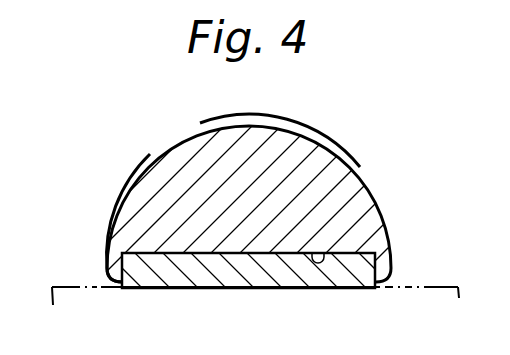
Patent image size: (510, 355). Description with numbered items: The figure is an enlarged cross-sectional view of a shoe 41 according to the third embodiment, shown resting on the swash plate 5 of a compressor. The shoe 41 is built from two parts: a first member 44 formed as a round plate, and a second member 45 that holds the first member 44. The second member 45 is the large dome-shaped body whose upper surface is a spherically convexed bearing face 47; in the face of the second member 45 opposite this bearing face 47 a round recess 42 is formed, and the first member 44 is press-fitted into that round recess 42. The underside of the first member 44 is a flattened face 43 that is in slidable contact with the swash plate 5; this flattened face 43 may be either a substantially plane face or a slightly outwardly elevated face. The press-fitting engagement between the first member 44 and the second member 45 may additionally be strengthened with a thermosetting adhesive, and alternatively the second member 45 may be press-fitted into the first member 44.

The shoe 41 is at (366, 174).
The spherically convexed bearing face 47 is at (312, 133).
The second member 45 is at (130, 204).
The first member 44 is at (128, 268).
The flattened face 43 is at (240, 289).
The round recess 42 is at (338, 250).
The swash plate 5 is at (430, 287).